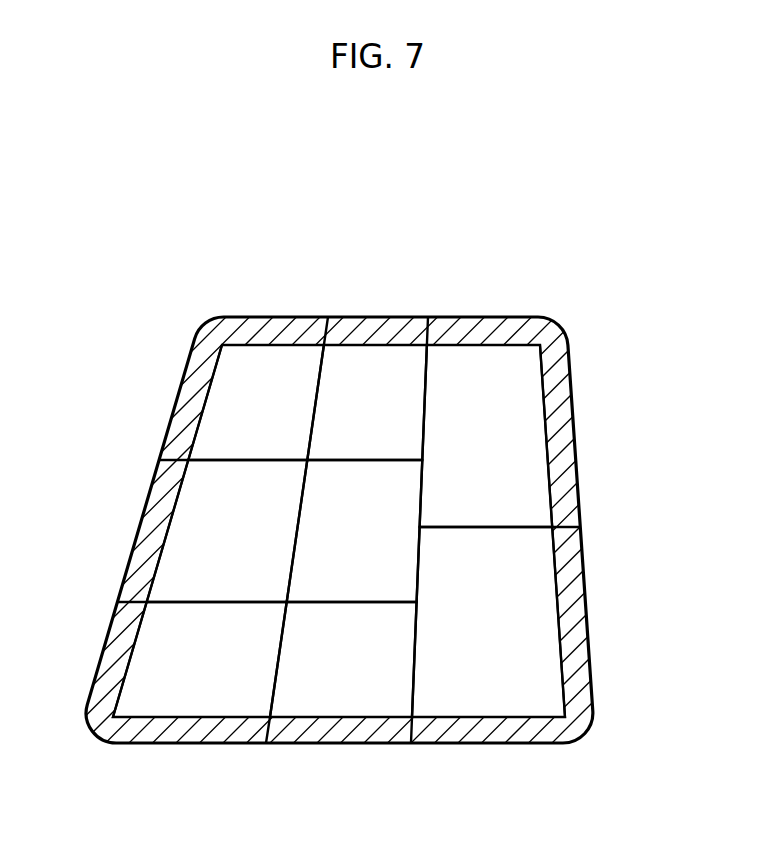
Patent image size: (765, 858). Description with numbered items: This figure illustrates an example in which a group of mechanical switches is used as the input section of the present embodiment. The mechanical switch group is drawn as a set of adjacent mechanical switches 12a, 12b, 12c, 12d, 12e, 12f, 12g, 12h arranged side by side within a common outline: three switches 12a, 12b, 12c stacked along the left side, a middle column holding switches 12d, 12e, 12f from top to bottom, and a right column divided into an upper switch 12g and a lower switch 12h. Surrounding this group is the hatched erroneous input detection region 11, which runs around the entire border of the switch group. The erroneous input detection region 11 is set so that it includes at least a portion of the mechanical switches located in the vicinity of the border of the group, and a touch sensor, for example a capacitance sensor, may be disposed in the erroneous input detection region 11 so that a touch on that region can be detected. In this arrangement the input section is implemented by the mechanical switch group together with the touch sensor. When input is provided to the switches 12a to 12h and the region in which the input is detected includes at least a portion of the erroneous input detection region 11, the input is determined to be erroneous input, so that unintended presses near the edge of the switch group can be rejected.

The erroneous input detection region 11 is at (473, 333).
The mechanical switch 12a is at (243, 388).
The mechanical switch 12b is at (190, 520).
The mechanical switch 12c is at (157, 638).
The mechanical switch 12d is at (378, 368).
The mechanical switch 12e is at (397, 553).
The mechanical switch 12f is at (338, 695).
The mechanical switch 12g is at (523, 435).
The mechanical switch 12h is at (535, 630).